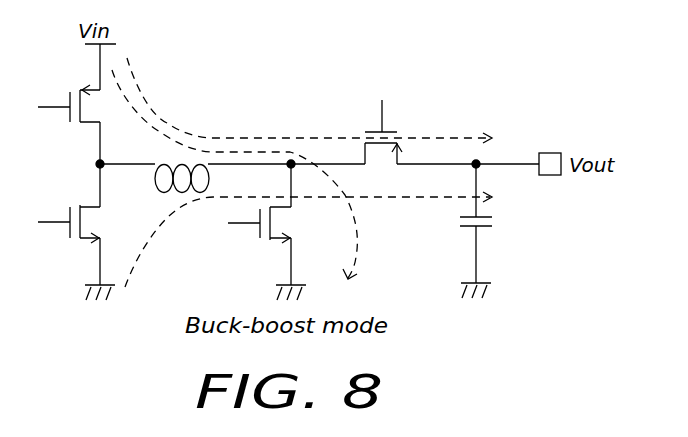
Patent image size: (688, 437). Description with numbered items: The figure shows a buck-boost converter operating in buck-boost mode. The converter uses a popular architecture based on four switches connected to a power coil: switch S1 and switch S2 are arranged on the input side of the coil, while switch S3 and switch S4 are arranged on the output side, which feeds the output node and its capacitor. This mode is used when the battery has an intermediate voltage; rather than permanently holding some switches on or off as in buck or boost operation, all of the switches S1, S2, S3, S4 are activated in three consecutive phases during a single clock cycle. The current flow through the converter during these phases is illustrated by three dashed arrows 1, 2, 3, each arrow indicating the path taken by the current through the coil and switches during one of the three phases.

The dashed arrow 1 is at (247, 174).
The dashed arrow 2 is at (309, 100).
The dashed arrow 3 is at (308, 239).
The switch S1 is at (68, 102).
The switch S2 is at (68, 220).
The switch S3 is at (264, 225).
The switch S4 is at (389, 132).